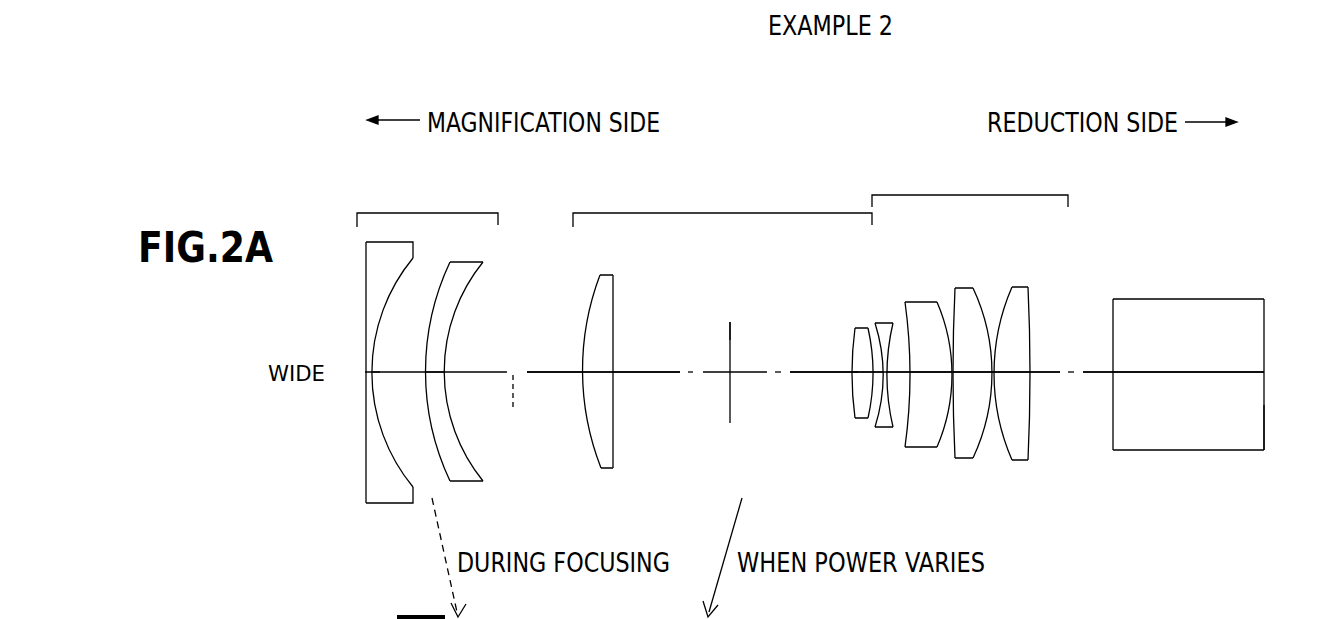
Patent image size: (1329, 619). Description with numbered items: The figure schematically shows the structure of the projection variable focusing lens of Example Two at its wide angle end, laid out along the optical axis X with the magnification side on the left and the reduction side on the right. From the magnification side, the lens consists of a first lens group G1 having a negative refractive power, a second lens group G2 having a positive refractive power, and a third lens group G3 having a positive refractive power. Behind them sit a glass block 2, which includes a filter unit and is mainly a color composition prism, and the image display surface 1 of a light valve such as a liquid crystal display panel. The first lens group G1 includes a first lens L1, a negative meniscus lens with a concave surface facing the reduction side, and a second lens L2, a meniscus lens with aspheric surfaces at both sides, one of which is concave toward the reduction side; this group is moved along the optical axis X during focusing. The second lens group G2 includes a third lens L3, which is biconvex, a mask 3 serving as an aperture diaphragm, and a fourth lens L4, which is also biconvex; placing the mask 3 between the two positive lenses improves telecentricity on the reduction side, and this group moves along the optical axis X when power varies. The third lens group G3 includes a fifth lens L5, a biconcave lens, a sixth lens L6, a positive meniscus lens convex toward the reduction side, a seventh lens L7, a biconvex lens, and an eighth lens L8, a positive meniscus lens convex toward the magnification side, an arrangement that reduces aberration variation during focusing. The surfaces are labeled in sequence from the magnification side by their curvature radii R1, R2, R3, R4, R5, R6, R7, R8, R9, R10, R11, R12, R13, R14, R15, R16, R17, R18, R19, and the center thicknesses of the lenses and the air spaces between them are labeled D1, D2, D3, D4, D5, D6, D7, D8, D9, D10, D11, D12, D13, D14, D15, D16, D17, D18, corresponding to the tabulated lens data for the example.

The image display surface 1 is at (1264, 420).
The glass block 2 is at (1185, 450).
The mask 3 is at (729, 412).
The optical axis X is at (513, 408).
The first lens group G1 is at (409, 373).
The second lens group G2 is at (704, 355).
The third lens group G3 is at (956, 347).
The first lens L1 is at (392, 503).
The second lens L2 is at (461, 483).
The third lens L3 is at (602, 468).
The fourth lens L4 is at (856, 418).
The fifth lens L5 is at (884, 428).
The sixth lens L6 is at (912, 447).
The seventh lens L7 is at (972, 458).
The eighth lens L8 is at (1025, 460).
The curvature radius of lens surface R1 is at (366, 362).
The curvature radius of lens surface R2 is at (375, 362).
The curvature radius of lens surface R3 is at (426, 366).
The curvature radius of lens surface R4 is at (447, 366).
The curvature radius of lens surface R5 is at (583, 363).
The curvature radius of lens surface R6 is at (614, 366).
The curvature radius of lens surface R7 is at (729, 345).
The curvature radius of lens surface R8 is at (853, 366).
The curvature radius of lens surface R9 is at (870, 358).
The curvature radius of lens surface R10 is at (881, 360).
The curvature radius of lens surface R11 is at (888, 350).
The curvature radius of lens surface R12 is at (897, 340).
The curvature radius of lens surface R13 is at (948, 328).
The curvature radius of lens surface R14 is at (950, 332).
The curvature radius of lens surface R15 is at (990, 340).
The curvature radius of lens surface R16 is at (997, 335).
The curvature radius of lens surface R17 is at (1028, 366).
The curvature radius of lens surface R18 is at (1113, 322).
The curvature radius of lens surface R19 is at (1290, 338).
The center thickness or air space D1 is at (363, 408).
The center thickness or air space D2 is at (392, 392).
The center thickness or air space D3 is at (441, 384).
The center thickness or air space D4 is at (555, 390).
The center thickness or air space D5 is at (598, 380).
The center thickness or air space D6 is at (646, 391).
The center thickness or air space D7 is at (799, 392).
The center thickness or air space D8 is at (850, 386).
The center thickness or air space D9 is at (855, 403).
The center thickness or air space D10 is at (866, 415).
The center thickness or air space D11 is at (919, 440).
The center thickness or air space D12 is at (942, 429).
The center thickness or air space D13 is at (988, 429).
The center thickness or air space D14 is at (1005, 402).
The center thickness or air space D15 is at (1020, 396).
The center thickness or air space D16 is at (1035, 379).
The center thickness or air space D17 is at (1102, 380).
The center thickness or air space D18 is at (1188, 390).